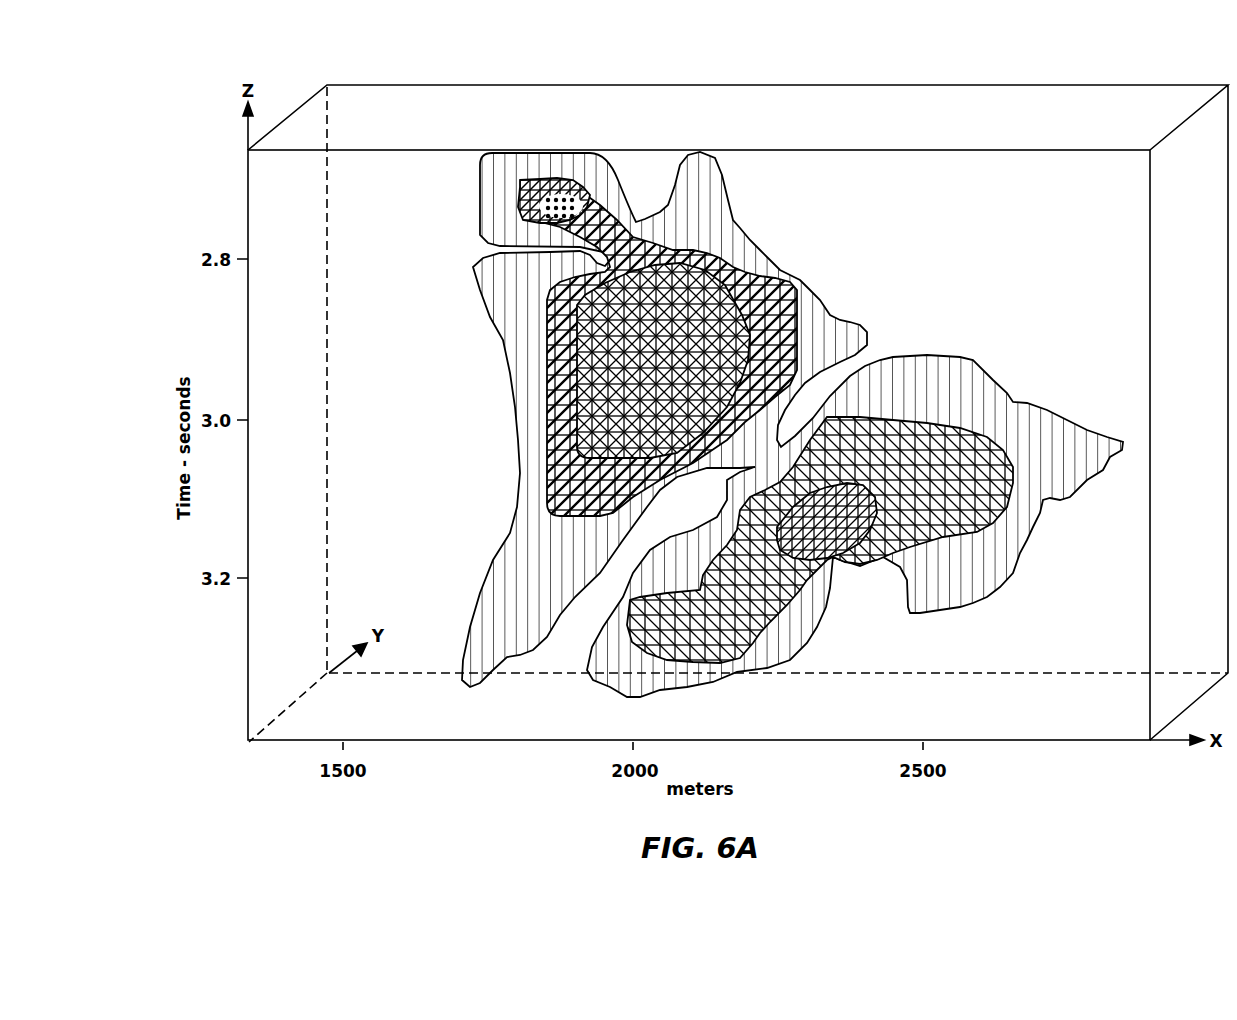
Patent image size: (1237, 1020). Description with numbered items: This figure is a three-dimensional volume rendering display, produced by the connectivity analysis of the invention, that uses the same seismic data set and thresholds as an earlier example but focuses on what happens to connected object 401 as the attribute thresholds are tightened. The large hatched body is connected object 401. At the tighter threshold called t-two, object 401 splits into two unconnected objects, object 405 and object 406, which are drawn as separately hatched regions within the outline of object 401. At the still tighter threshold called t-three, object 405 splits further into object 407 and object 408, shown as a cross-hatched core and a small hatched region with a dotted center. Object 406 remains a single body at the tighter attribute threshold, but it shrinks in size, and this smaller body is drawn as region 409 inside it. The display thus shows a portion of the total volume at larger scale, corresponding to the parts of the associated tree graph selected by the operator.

The connected object 401 is at (487, 271).
The unconnected object 405 is at (800, 290).
The unconnected object 406 is at (820, 540).
The object 407 is at (663, 360).
The object 408 is at (520, 196).
The smaller-size body 409 is at (834, 558).